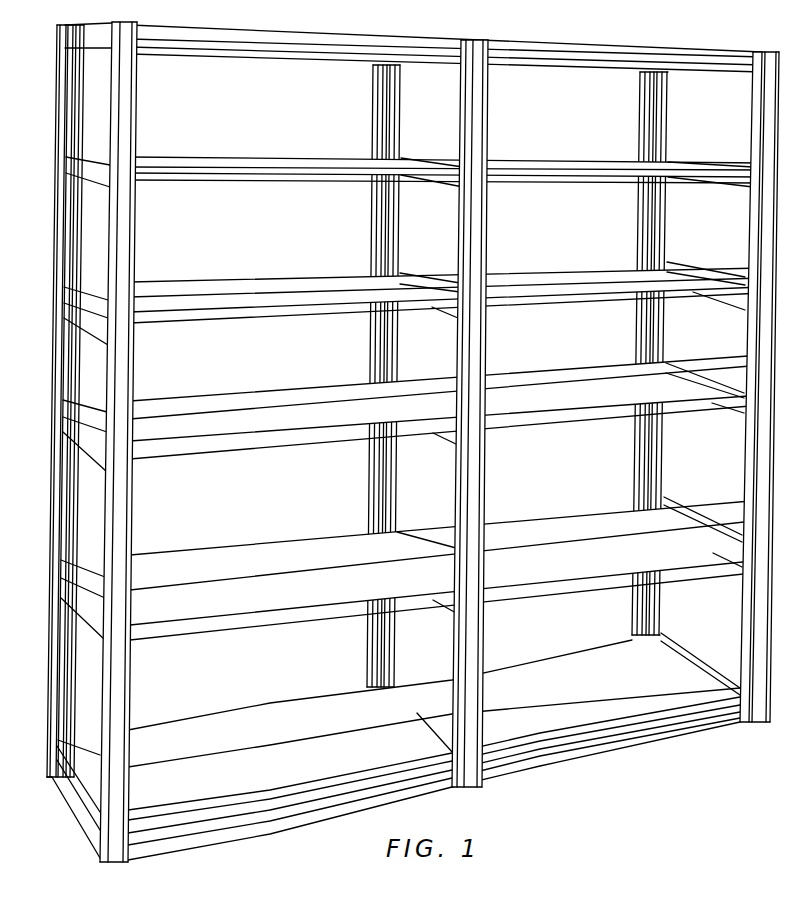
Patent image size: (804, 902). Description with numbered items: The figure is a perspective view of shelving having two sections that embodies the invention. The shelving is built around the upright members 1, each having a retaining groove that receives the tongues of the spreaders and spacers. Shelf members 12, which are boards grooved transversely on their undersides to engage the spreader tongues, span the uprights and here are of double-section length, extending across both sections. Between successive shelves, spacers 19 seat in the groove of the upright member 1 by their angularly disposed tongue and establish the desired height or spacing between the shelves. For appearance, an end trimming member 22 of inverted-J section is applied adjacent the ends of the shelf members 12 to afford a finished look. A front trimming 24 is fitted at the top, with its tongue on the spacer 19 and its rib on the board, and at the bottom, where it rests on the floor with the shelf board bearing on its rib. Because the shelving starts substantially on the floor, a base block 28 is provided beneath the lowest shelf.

The upright member 1 is at (120, 372).
The shelf member 12 is at (243, 605).
The spacer 19 is at (72, 222).
The end trimming member 22 is at (77, 788).
The front trimming 24 is at (292, 48).
The base block 28 is at (82, 817).